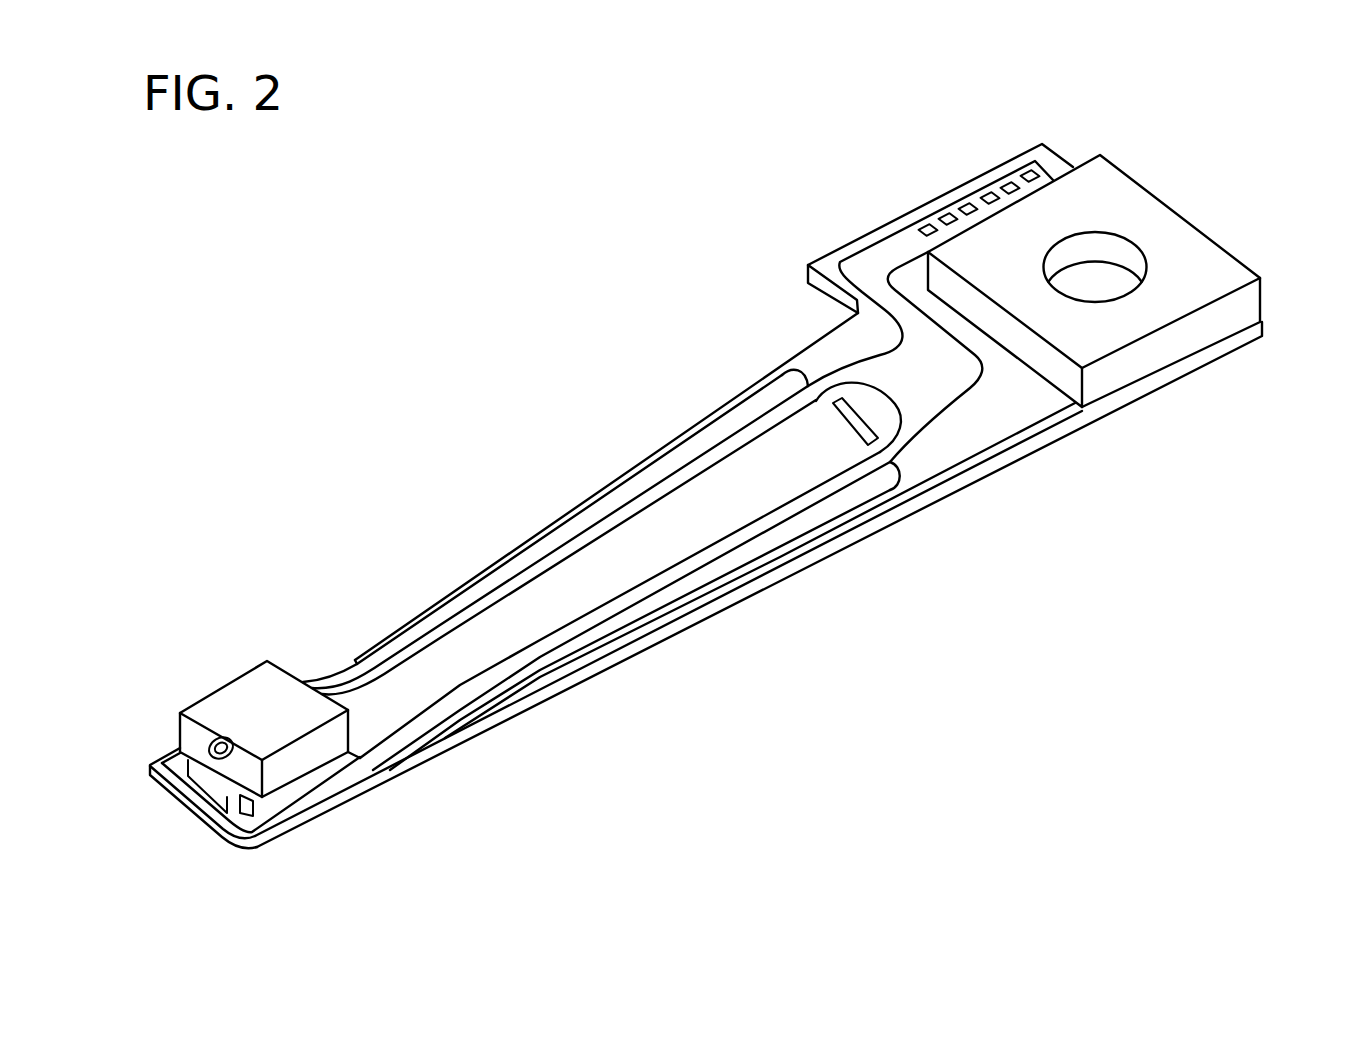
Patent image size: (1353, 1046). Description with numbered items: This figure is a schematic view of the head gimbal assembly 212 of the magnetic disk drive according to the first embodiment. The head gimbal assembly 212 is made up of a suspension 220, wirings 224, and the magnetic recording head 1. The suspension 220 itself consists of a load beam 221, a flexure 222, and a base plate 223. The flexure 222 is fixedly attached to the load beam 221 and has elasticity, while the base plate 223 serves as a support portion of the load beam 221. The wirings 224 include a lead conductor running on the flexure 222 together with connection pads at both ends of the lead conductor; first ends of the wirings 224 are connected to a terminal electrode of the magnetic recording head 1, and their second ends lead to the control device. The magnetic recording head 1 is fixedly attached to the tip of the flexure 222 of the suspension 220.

The head gimbal assembly 212 is at (672, 242).
The suspension 220 is at (612, 464).
The load beam 221 is at (950, 460).
The flexure 222 is at (727, 562).
The base plate 223 is at (1140, 318).
The wirings 224 is at (533, 647).
The magnetic recording head 1 is at (238, 688).